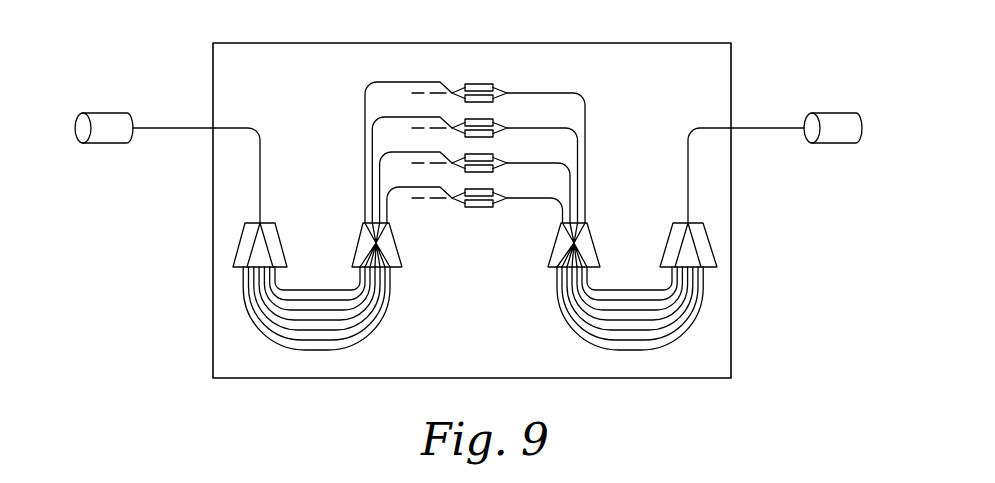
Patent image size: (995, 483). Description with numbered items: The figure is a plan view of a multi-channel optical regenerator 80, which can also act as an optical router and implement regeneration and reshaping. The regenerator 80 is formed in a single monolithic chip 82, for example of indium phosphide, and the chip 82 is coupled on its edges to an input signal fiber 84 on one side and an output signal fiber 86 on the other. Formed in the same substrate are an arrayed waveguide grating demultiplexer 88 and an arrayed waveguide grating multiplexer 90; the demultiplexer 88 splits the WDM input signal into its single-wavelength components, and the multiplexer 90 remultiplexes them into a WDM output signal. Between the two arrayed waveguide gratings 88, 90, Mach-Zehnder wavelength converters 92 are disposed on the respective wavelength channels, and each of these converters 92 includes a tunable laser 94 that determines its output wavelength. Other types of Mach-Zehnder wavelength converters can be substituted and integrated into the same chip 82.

The multi-channel optical regenerator 80 is at (768, 342).
The monolithic chip 82 is at (667, 43).
The input signal fiber 84 is at (108, 113).
The output signal fiber 86 is at (838, 113).
The arrayed waveguide grating demultiplexer 88 is at (378, 338).
The arrayed waveguide grating multiplexer 90 is at (570, 338).
The Mach-Zehnder wavelength converters 92 is at (519, 79).
The tunable lasers 94 is at (425, 93).